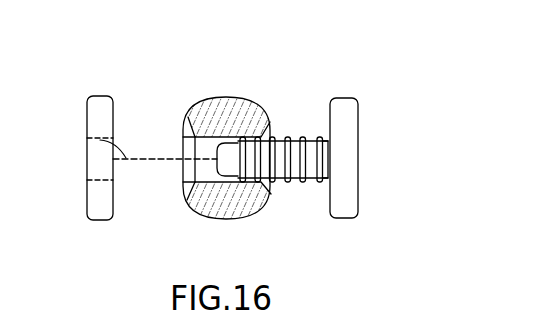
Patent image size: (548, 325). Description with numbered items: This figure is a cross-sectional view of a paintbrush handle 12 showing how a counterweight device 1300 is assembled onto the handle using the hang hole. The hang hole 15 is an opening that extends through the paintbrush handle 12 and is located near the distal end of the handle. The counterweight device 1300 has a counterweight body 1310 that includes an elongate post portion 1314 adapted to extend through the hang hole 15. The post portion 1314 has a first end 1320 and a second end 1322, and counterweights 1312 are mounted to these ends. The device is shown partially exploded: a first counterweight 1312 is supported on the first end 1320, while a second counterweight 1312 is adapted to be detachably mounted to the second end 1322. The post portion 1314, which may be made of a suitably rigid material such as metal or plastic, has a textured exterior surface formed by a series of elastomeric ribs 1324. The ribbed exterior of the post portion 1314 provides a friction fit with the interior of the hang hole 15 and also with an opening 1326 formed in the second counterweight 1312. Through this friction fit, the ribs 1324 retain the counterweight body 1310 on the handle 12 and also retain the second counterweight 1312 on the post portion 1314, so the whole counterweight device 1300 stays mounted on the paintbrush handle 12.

The counterweight device 1300 is at (305, 49).
The paintbrush handle 12 is at (230, 98).
The hang hole 15 is at (185, 179).
The counterweight body 1310 is at (240, 177).
The counterweight 1312 is at (88, 203).
The elongate post portion 1314 is at (302, 183).
The first end 1320 is at (320, 183).
The second end 1322 is at (217, 170).
The elastomeric ribs 1324 is at (304, 136).
The opening 1326 is at (132, 150).